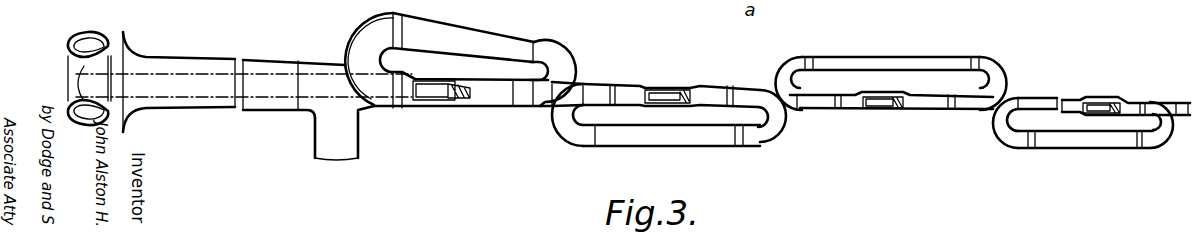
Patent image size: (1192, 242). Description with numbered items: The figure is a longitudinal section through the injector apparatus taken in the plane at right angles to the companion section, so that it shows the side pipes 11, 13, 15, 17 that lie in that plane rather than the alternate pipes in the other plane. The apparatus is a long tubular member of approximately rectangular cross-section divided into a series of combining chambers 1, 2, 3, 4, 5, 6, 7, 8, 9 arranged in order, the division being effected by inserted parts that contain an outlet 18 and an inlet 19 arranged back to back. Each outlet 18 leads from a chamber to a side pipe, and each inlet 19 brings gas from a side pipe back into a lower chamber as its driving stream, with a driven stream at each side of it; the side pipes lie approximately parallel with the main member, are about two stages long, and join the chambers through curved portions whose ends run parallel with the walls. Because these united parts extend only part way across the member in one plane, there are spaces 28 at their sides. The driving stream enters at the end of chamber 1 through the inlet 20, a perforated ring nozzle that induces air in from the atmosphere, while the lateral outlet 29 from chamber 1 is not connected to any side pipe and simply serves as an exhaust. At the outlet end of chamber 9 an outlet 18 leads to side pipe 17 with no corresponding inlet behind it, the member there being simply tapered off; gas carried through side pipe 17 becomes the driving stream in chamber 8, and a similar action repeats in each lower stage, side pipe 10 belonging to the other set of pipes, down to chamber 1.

The combining chamber 1 is at (290, 78).
The combining chamber 2 is at (448, 71).
The combining chamber 3 is at (545, 103).
The combining chamber 4 is at (671, 115).
The combining chamber 5 is at (727, 118).
The combining chamber 6 is at (891, 110).
The combining chamber 7 is at (949, 113).
The combining chamber 8 is at (1069, 100).
The combining chamber 9 is at (1143, 103).
The side pipe 10 is at (192, 100).
The side pipe 11 is at (403, 28).
The side pipe 13 is at (603, 140).
The side pipe 15 is at (814, 62).
The side pipe 17 is at (1040, 141).
The outlet 18 is at (447, 90).
The inlet 19 is at (390, 88).
The inlet for the driving stream 20 is at (75, 82).
The spaces 28 is at (432, 78).
The lateral outlet 29 is at (328, 133).